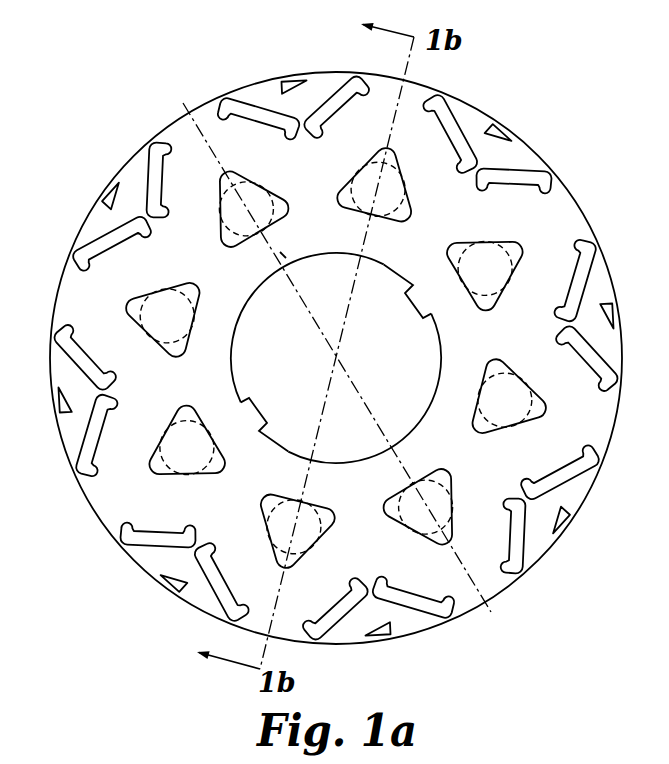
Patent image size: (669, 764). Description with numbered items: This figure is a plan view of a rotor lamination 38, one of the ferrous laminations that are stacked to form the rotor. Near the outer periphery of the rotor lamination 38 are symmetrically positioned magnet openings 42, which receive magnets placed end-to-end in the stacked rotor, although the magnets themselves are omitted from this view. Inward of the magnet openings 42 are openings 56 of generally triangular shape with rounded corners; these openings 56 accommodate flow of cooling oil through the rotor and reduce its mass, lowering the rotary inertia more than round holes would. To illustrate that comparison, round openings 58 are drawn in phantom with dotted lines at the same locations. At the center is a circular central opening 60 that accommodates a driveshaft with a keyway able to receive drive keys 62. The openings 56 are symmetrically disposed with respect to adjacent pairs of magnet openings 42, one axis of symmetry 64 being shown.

The rotor lamination 38 is at (215, 118).
The magnet openings 42 is at (325, 100).
The openings 56 is at (384, 158).
The round openings 58 is at (236, 186).
The circular central opening 60 is at (385, 268).
The drive keys 62 is at (417, 305).
The axis of symmetry 64 is at (284, 256).